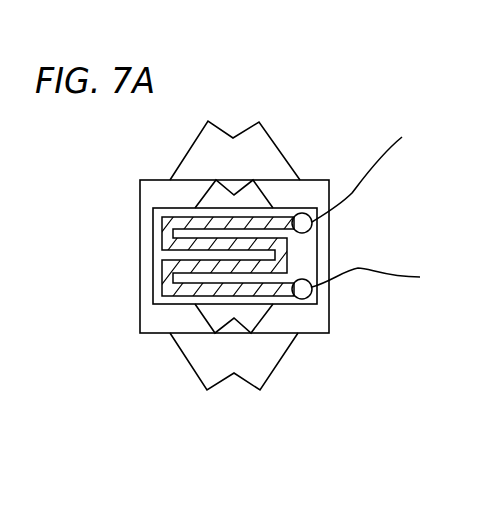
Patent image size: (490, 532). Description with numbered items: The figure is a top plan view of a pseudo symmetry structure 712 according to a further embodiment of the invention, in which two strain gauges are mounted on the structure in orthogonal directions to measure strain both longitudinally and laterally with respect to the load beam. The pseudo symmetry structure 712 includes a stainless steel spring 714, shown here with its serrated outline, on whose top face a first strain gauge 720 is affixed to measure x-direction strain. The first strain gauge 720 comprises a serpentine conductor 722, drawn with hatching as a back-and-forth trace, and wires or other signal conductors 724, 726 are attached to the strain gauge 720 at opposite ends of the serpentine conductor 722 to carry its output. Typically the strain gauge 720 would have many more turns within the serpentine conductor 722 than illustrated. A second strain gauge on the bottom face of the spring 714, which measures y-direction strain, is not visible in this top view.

The pseudo symmetry structure 712 is at (246, 72).
The stainless steel spring 714 is at (260, 153).
The first strain gauge 720 is at (275, 214).
The serpentine conductor 722 is at (277, 222).
The signal conductor 724 is at (360, 193).
The signal conductor 726 is at (357, 269).